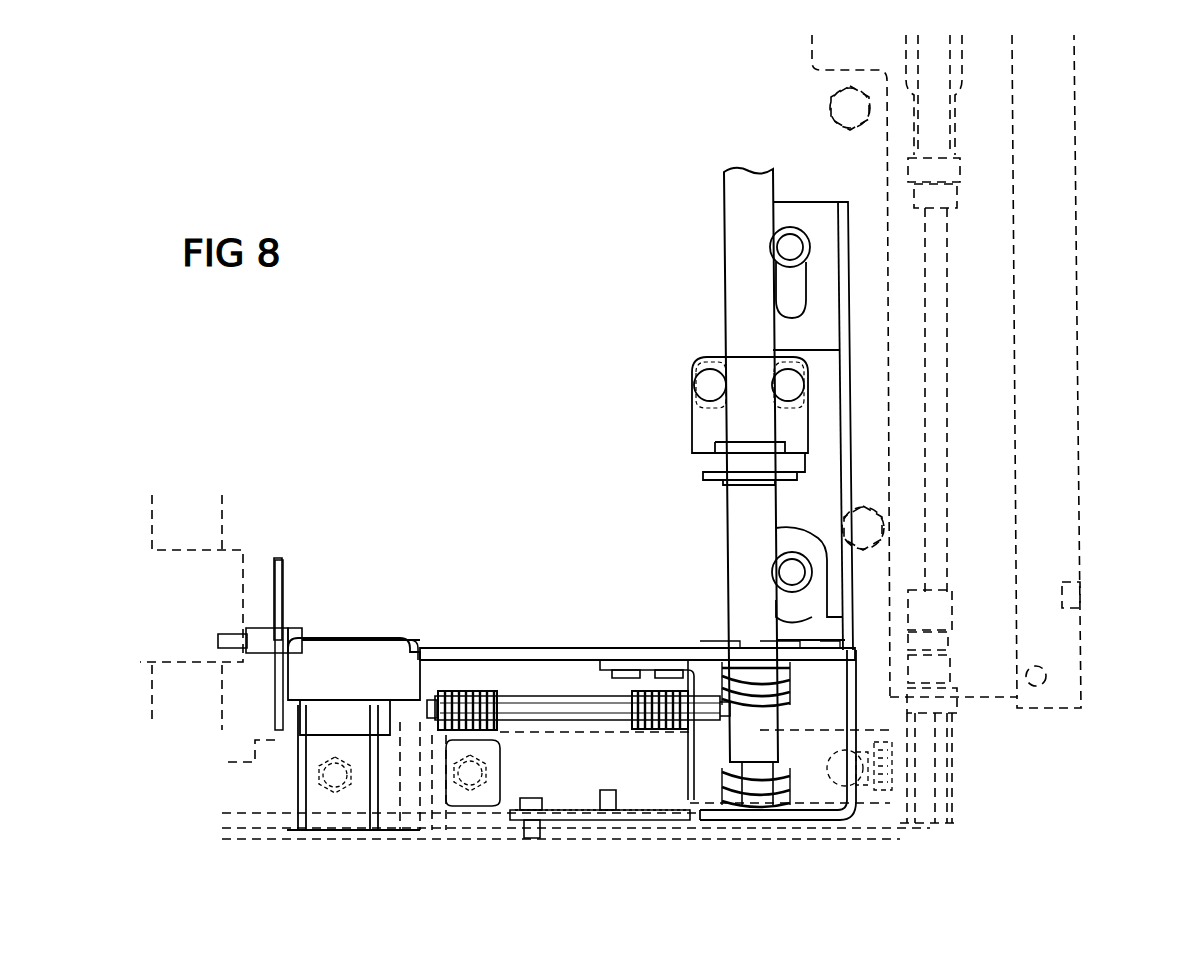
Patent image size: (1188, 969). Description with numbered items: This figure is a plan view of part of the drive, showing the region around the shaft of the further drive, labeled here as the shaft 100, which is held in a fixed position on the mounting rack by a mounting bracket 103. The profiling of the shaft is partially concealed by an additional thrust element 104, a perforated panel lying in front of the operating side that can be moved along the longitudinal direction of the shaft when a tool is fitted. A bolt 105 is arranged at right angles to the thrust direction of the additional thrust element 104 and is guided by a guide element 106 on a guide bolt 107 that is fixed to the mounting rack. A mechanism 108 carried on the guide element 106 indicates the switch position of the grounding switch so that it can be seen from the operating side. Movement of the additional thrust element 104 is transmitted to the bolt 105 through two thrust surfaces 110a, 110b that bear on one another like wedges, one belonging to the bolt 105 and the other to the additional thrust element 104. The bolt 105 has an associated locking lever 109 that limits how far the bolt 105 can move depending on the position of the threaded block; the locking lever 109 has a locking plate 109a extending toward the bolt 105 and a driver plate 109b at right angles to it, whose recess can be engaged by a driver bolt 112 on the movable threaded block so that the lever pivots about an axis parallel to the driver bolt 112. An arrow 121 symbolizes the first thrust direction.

The rod 100 is at (724, 240).
The mounting bracket 103 is at (692, 420).
The additional thrust element 104 is at (857, 702).
The bolt 105 is at (457, 648).
The guide element 106 is at (610, 677).
The guide bolt 107 is at (543, 690).
The mechanism 108 is at (625, 812).
The locking lever 109 is at (267, 692).
The locking plate 109a is at (395, 640).
The driver plate 109b is at (283, 598).
The thrust surface 110a is at (722, 712).
The thrust surface 110b is at (722, 712).
The driver bolt 112 is at (264, 628).
The arrow 121 is at (1107, 312).